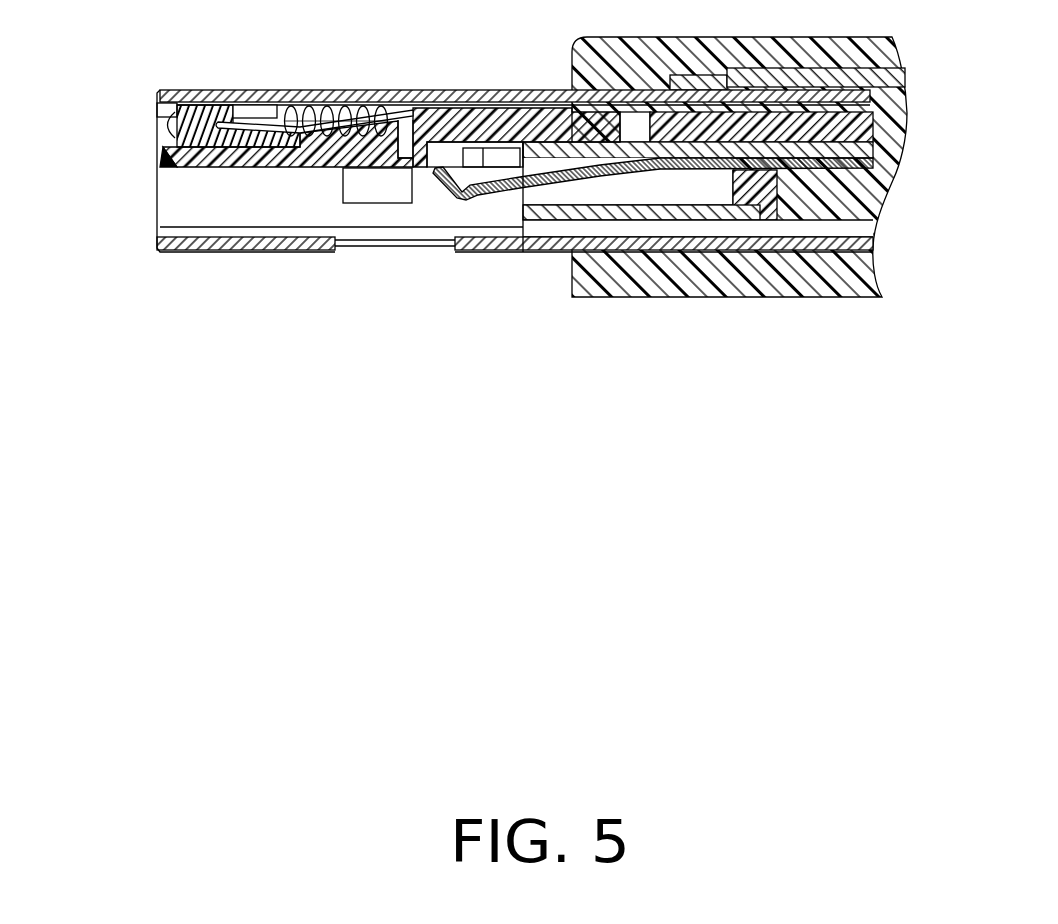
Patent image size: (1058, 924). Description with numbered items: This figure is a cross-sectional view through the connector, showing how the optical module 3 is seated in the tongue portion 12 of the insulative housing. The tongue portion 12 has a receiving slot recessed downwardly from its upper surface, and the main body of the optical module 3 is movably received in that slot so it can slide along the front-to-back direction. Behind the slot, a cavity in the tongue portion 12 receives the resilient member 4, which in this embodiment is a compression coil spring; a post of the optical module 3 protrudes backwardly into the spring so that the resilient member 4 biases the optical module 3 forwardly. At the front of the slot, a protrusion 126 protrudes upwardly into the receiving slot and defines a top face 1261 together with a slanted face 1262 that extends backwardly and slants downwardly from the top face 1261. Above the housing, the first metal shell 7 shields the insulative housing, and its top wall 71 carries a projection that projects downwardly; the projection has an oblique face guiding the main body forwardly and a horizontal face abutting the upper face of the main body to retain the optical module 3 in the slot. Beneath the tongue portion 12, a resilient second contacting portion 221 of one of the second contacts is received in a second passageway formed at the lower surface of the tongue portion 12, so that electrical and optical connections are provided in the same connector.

The tongue portion 12 is at (218, 156).
The protrusion 126 is at (165, 152).
The top face 1261 is at (168, 130).
The slanted face 1262 is at (173, 152).
The optical module 3 is at (190, 128).
The resilient member 4 is at (317, 120).
The first metal shell 7 is at (253, 97).
The top wall 71 is at (353, 96).
The second contacting portion 221 is at (497, 183).